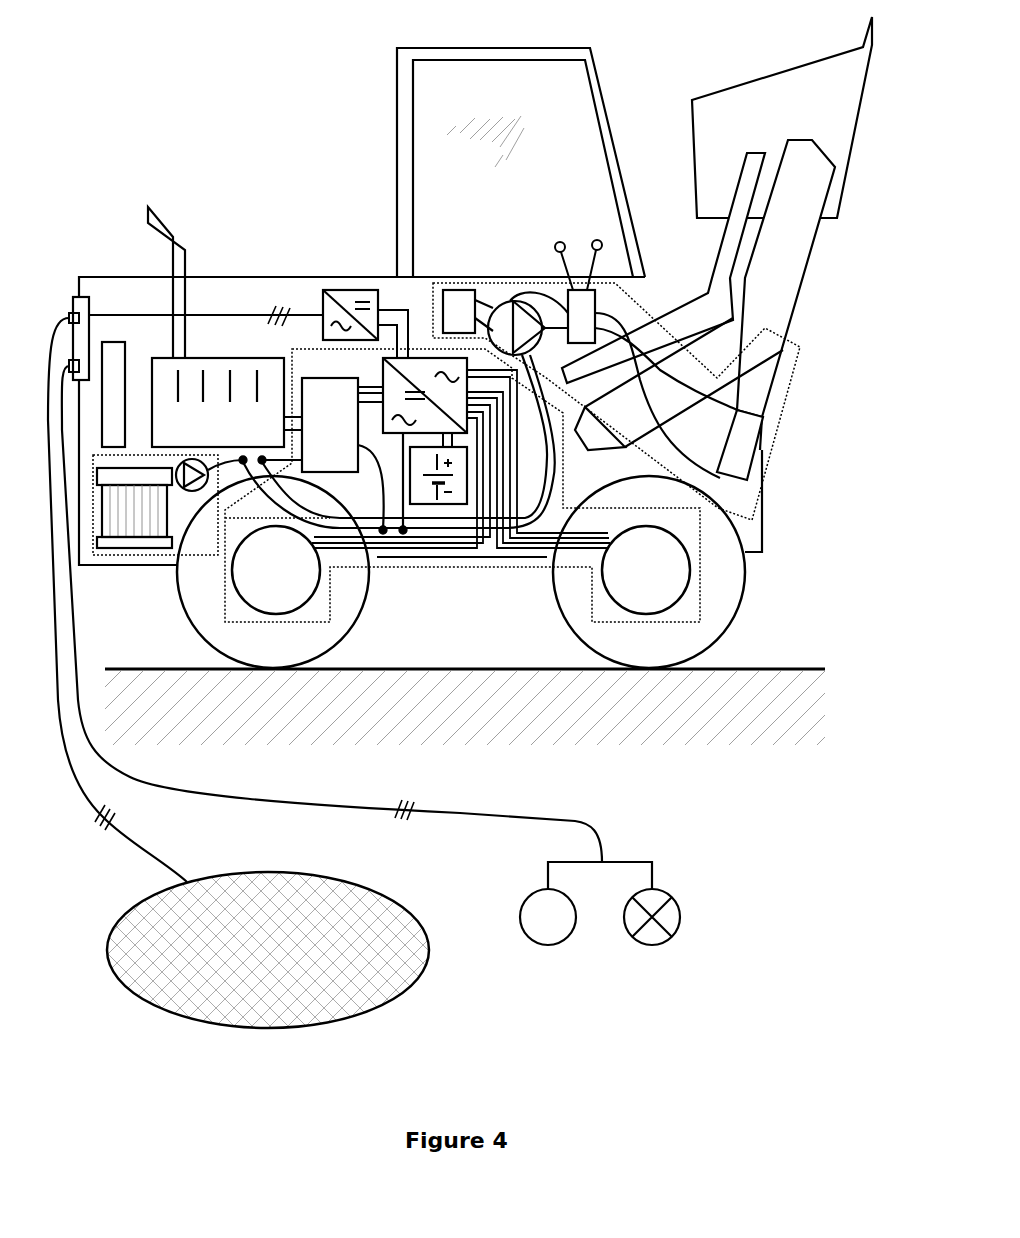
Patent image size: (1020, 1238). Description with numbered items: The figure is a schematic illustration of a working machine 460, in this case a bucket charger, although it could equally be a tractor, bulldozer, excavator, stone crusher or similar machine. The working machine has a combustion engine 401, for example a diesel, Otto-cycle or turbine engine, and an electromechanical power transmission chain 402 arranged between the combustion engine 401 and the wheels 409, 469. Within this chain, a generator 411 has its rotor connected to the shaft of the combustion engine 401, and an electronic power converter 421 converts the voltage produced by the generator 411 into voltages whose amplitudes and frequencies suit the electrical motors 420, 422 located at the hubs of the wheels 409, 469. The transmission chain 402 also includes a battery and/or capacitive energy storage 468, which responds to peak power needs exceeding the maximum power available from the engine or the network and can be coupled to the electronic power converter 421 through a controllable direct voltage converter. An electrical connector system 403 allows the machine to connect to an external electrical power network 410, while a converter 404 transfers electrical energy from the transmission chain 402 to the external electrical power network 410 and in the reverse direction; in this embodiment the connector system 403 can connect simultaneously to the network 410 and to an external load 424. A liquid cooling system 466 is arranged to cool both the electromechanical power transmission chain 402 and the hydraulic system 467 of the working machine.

The working machine 460 is at (377, 128).
The electrical connector system 403 is at (68, 318).
The converter 404 is at (348, 288).
The combustion engine 401 is at (224, 433).
The electronic power converter 421 is at (383, 372).
The generator 411 is at (345, 463).
The electrical motor 420 is at (298, 600).
The wheel 409 is at (296, 651).
The liquid cooling system 466 is at (130, 557).
The battery and/or capacitive energy storage 468 is at (440, 505).
The electromechanical power transmission chain 402 is at (503, 568).
The electrical motor 422 is at (666, 600).
The wheel 469 is at (666, 653).
The hydraulic system 467 is at (778, 422).
The external electrical power network 410 is at (291, 966).
The external load 424 is at (687, 947).